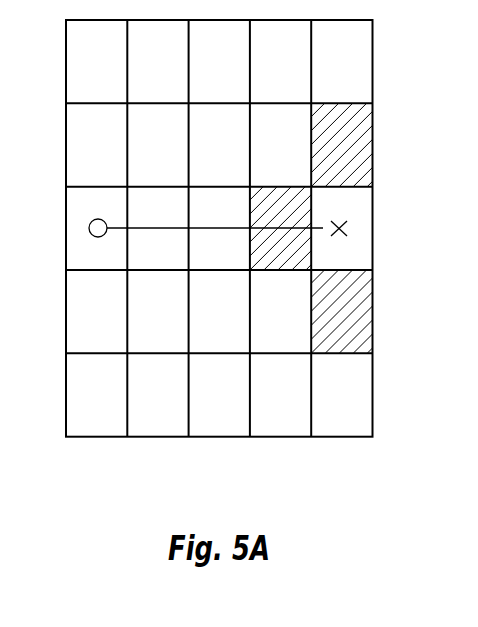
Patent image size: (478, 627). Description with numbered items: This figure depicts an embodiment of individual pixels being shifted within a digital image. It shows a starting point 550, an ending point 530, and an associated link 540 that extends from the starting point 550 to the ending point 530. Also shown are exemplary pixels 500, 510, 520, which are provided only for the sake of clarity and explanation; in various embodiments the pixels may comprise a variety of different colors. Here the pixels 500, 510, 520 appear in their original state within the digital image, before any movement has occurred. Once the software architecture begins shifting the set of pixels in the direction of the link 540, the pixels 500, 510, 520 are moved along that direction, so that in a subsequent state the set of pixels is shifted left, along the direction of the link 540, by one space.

The pixel 500 is at (282, 212).
The pixel 510 is at (355, 316).
The pixel 520 is at (350, 148).
The ending point 530 is at (89, 229).
The link 540 is at (93, 292).
The starting point 550 is at (347, 230).